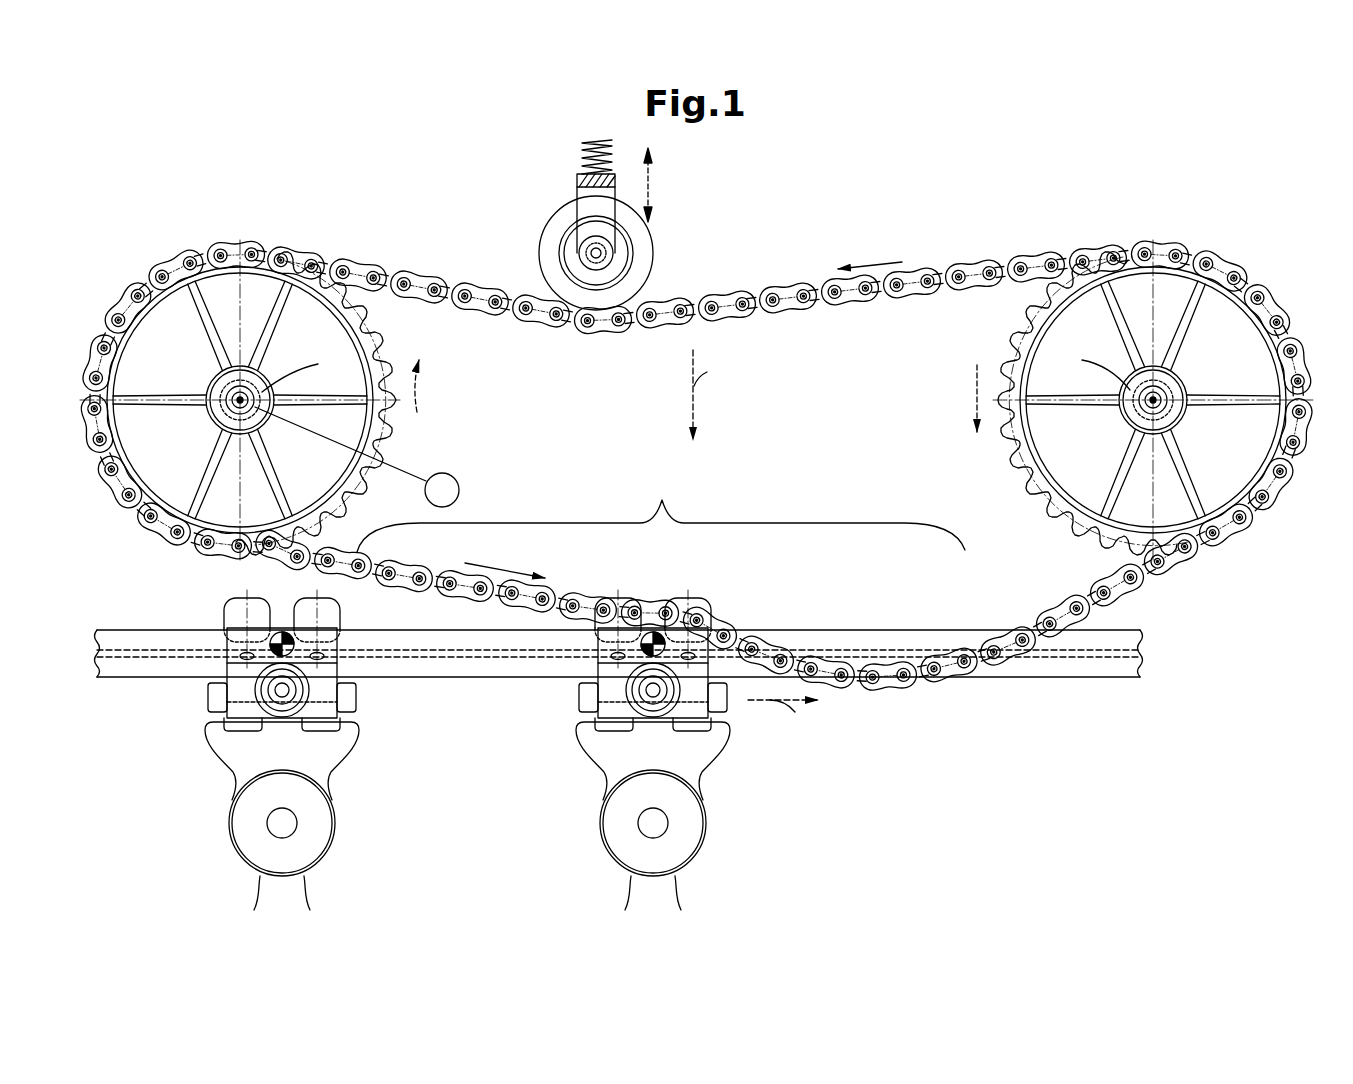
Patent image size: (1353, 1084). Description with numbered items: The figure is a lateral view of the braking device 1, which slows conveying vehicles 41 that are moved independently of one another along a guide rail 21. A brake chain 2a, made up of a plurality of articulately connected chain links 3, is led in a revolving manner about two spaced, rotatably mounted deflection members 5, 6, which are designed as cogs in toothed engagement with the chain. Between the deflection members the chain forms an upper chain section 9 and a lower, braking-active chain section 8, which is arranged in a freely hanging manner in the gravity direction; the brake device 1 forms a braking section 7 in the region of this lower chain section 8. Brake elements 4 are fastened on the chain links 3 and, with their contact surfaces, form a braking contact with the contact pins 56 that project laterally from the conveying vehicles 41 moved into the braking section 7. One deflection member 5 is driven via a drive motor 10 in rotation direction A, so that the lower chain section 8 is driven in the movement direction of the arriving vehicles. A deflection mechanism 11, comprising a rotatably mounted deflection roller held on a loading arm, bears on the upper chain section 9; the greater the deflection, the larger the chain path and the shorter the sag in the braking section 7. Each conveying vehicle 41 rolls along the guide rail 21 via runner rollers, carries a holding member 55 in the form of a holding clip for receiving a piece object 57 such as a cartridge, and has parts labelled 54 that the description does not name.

The braking device 1 is at (696, 525).
The brake chain 2a is at (767, 318).
The chain links 3 is at (696, 483).
The brake elements 4 is at (1012, 664).
The deflection member 5 is at (380, 353).
The deflection member 6 is at (1022, 357).
The braking section 7 is at (662, 500).
The lower, braking-active chain section 8 is at (896, 684).
The upper chain section 9 is at (808, 290).
The drive motor 10 is at (458, 482).
The deflection mechanism 11 is at (540, 232).
The guide rail 21 is at (1072, 665).
The conveying vehicles 41 is at (511, 730).
The guide roller 54 is at (590, 703).
The holding member 55 is at (716, 757).
The contact pins 56 is at (658, 640).
The piece object 57 is at (690, 833).